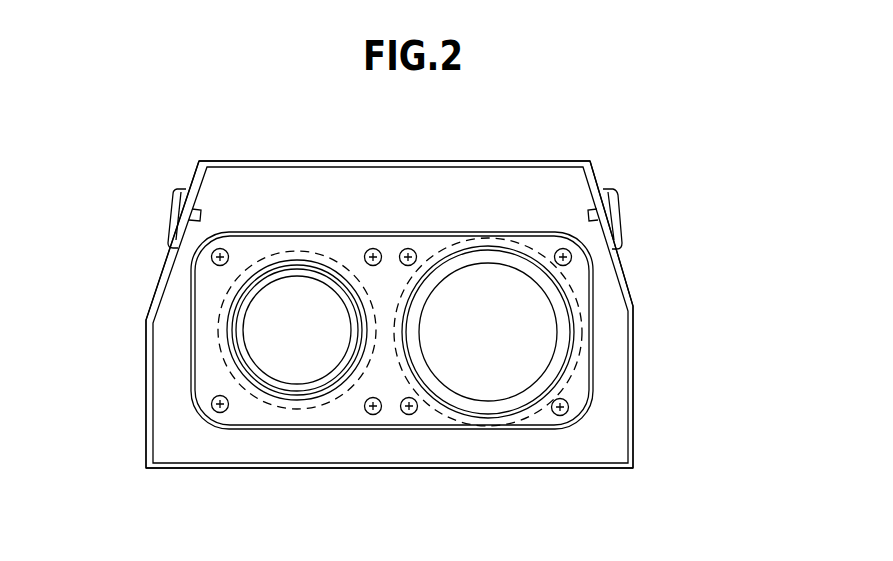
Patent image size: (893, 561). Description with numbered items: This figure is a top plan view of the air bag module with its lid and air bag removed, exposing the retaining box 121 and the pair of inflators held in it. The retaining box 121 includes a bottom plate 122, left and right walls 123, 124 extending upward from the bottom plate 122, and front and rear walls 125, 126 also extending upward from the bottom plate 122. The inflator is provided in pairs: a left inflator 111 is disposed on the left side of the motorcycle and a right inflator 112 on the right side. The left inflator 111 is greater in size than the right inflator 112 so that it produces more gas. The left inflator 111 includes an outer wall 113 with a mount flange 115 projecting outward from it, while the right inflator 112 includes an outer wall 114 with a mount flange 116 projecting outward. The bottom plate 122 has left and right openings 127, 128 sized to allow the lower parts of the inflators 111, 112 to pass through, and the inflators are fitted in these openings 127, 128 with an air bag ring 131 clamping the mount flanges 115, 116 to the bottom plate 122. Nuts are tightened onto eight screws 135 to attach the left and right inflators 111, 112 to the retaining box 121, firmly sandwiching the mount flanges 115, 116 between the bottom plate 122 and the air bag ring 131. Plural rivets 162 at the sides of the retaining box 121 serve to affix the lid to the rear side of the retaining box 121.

The left inflator 111 is at (486, 418).
The right inflator 112 is at (305, 403).
The outer wall 113 is at (517, 414).
The outer wall 114 is at (284, 403).
The mount flange 115 is at (538, 414).
The mount flange 116 is at (255, 402).
The retaining box 121 is at (639, 321).
The bottom plate 122 is at (608, 388).
The left wall 123 is at (635, 356).
The right wall 124 is at (147, 367).
The front wall 125 is at (400, 468).
The rear wall 126 is at (390, 163).
The left opening 127 is at (556, 362).
The right opening 128 is at (237, 345).
The air bag ring 131 is at (332, 245).
The screws 135 is at (222, 248).
The rivets 162 is at (170, 203).